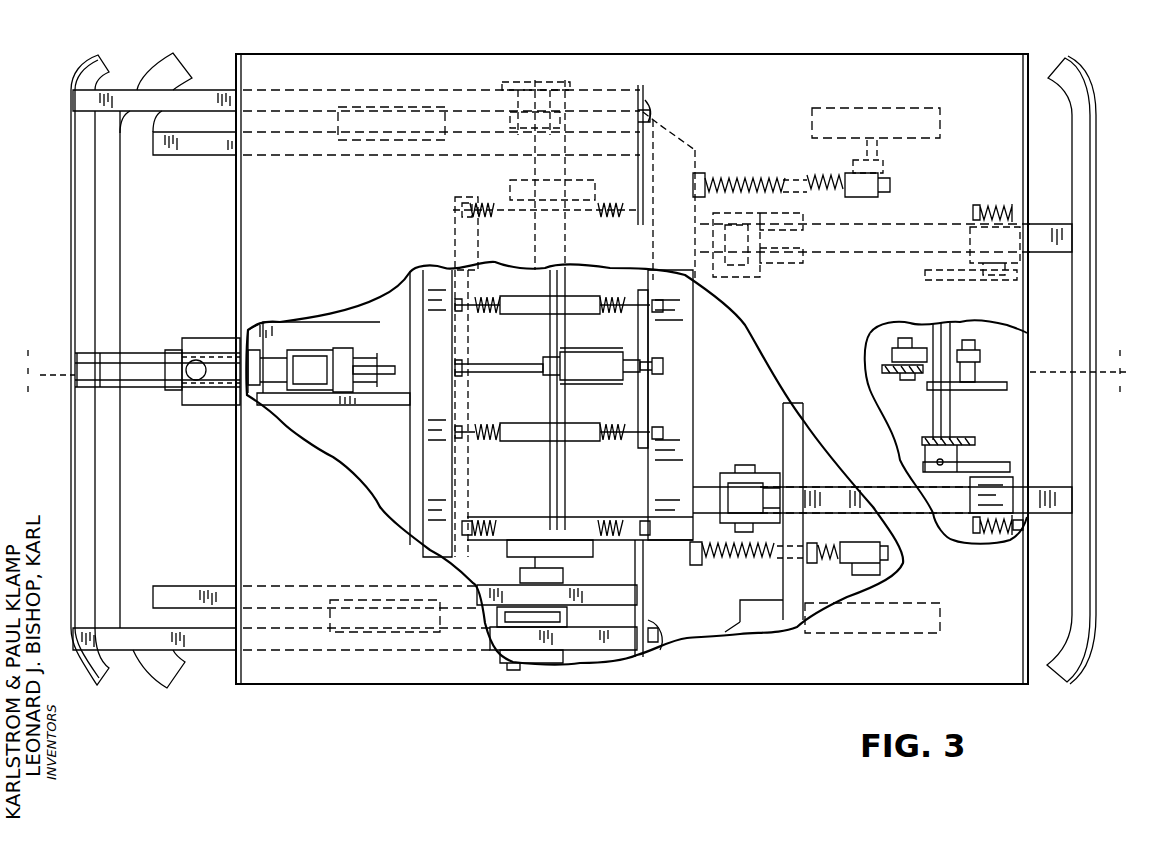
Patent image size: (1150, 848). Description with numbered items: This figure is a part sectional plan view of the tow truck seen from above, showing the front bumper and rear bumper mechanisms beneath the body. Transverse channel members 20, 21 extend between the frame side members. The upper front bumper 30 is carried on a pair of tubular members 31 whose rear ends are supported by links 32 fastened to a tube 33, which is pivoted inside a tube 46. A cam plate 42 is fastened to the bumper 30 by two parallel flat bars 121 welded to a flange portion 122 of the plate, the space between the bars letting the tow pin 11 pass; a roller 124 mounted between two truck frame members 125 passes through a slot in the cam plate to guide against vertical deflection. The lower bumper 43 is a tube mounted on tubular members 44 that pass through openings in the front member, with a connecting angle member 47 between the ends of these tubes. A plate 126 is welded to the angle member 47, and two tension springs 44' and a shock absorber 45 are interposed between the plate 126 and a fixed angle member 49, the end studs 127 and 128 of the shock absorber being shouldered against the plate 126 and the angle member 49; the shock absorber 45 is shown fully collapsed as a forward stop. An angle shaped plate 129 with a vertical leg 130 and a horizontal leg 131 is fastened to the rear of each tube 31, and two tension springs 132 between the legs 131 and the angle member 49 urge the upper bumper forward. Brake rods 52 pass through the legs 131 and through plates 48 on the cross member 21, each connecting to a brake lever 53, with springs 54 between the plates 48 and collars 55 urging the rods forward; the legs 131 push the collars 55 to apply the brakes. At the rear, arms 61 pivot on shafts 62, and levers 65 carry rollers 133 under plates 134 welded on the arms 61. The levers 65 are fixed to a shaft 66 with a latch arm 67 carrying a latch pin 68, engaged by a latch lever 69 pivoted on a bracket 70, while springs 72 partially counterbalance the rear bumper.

The tow pin 11 is at (190, 356).
The transverse channel member 20 is at (410, 275).
The transverse channel member 21 is at (796, 440).
The upper front bumper 30 is at (73, 232).
The tubular members 31 is at (118, 100).
The links 32 is at (487, 617).
The tube 33 is at (553, 663).
The cam plate 42 is at (380, 376).
The lower bumper 43 is at (155, 683).
The tubular members 44 is at (411, 633).
The tension springs 44' is at (559, 371).
The shock absorber 45 is at (238, 155).
The tube 46 is at (560, 480).
The connecting angle member 47 is at (686, 445).
The plates 48 is at (783, 178).
The angle member 49 is at (430, 264).
The rods 52 is at (742, 176).
The brake lever 53 is at (885, 568).
The springs 54 is at (728, 178).
The collar 55 is at (700, 173).
The arms 61 is at (820, 487).
The shafts 62 is at (735, 262).
The levers 65 is at (1020, 270).
The shaft 66 is at (933, 415).
The latch arm 67 is at (975, 390).
The latch pin 68 is at (962, 353).
The latch lever 69 is at (874, 336).
The bracket 70 is at (884, 377).
The springs 72 is at (1005, 535).
The flat bars 121 is at (168, 345).
The flange portion 122 is at (262, 388).
The roller 124 is at (312, 350).
The truck frame members 125 is at (290, 325).
The plate 126 is at (637, 402).
The end stud 127 is at (520, 350).
The end stud 128 is at (655, 356).
The angle shaped plate 129 is at (640, 85).
The vertical leg 130 is at (655, 100).
The horizontal leg 131 is at (650, 118).
The tension springs 132 is at (582, 222).
The roller 133 is at (985, 250).
The plate 134 is at (925, 272).